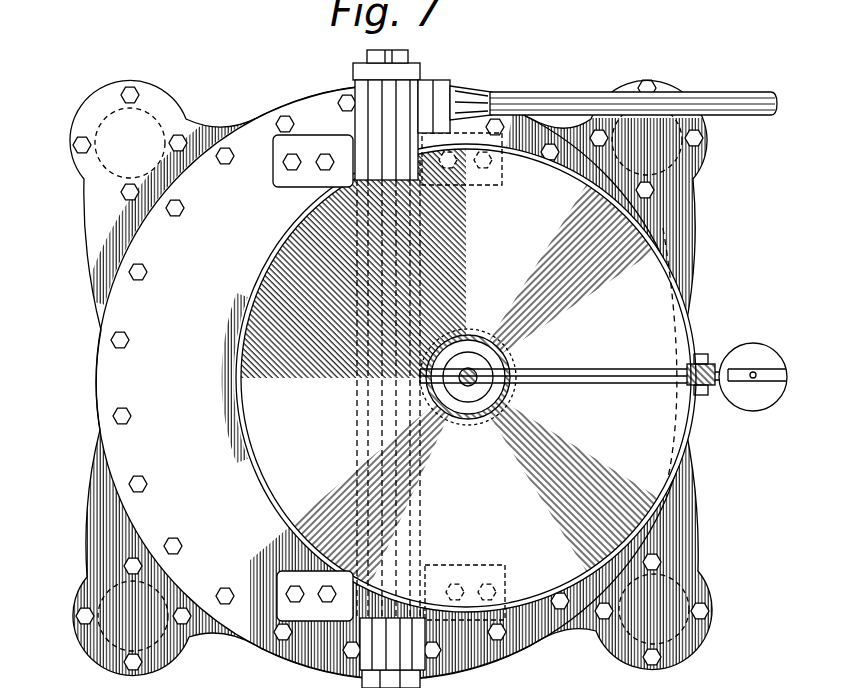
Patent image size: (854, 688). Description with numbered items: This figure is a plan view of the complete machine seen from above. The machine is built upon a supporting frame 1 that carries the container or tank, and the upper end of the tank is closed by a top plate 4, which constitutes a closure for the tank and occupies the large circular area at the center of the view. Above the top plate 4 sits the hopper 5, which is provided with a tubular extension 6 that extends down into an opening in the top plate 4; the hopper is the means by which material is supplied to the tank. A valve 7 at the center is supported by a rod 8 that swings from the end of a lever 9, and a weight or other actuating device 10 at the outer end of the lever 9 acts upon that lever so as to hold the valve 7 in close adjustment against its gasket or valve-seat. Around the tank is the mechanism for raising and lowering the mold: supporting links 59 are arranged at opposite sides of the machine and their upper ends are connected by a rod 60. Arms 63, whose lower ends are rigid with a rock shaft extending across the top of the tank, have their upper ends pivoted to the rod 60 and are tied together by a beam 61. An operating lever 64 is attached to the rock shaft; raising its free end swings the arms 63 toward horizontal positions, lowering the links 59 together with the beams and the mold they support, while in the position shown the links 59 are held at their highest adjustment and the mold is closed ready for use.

The supporting frame 1 is at (97, 556).
The top plate 4 is at (395, 379).
The hopper 5 is at (463, 376).
The tubular extension 6 is at (486, 333).
The valve 7 is at (460, 400).
The rod 8 is at (472, 371).
The lever 9 is at (622, 384).
The weight or other actuating device 10 is at (748, 350).
The supporting links 59 is at (420, 68).
The rod 60 is at (378, 60).
The beam 61 is at (398, 508).
The arms 63 is at (367, 118).
The operating lever 64 is at (746, 96).